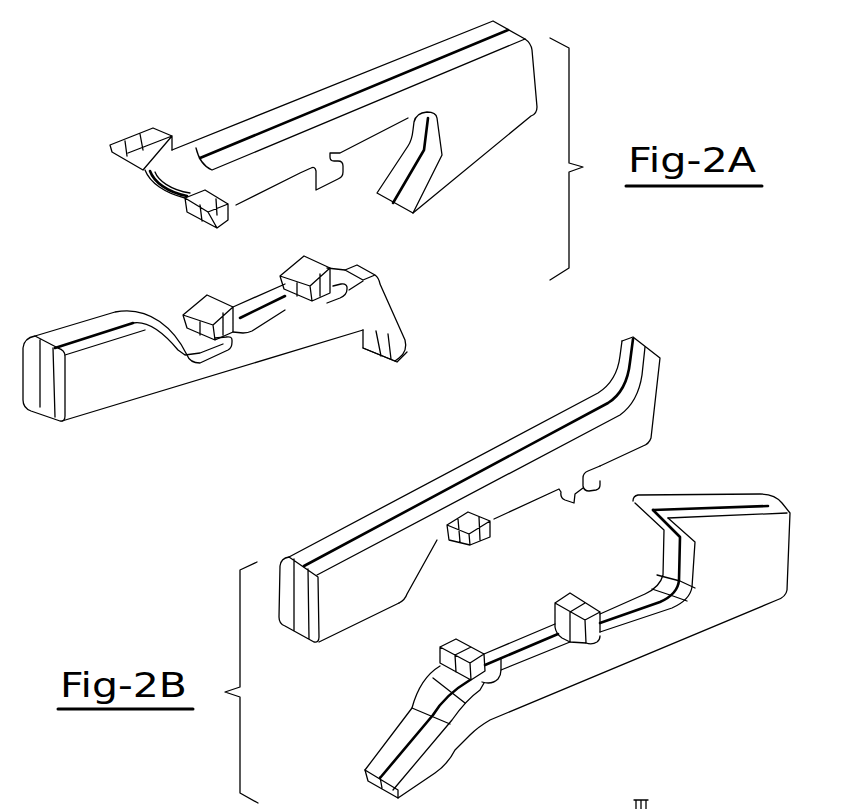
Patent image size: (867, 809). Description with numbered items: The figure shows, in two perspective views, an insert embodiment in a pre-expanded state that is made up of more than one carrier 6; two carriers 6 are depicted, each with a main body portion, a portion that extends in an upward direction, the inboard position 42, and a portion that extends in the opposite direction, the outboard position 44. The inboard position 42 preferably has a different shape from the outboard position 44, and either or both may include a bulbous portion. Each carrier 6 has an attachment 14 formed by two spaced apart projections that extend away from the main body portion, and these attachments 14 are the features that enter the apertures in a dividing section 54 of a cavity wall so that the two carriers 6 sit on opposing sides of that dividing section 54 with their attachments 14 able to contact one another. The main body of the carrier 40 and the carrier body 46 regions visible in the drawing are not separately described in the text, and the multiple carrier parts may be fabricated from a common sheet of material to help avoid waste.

In FIG. 2A, the carrier 6 is at (168, 185).
In FIG. 2A, the attachment 14 is at (303, 260).
In FIG. 2B, the attachment 14 is at (593, 488).
In FIG. 2A, the clip body 40 is at (412, 100).
In FIG. 2A, the portion that extends in an upward direction (inboard position) 42 is at (463, 158).
In FIG. 2B, the portion that extends in an upward direction (inboard position) 42 is at (657, 350).
In FIG. 2A, the portion that extends in the opposite direction (outboard position) 44 is at (172, 155).
In FIG. 2B, the portion that extends in the opposite direction (outboard position) 44 is at (302, 638).
In FIG. 2A, the base portion 46 is at (290, 340).
In FIG. 2B, the dividing section 54 is at (443, 547).